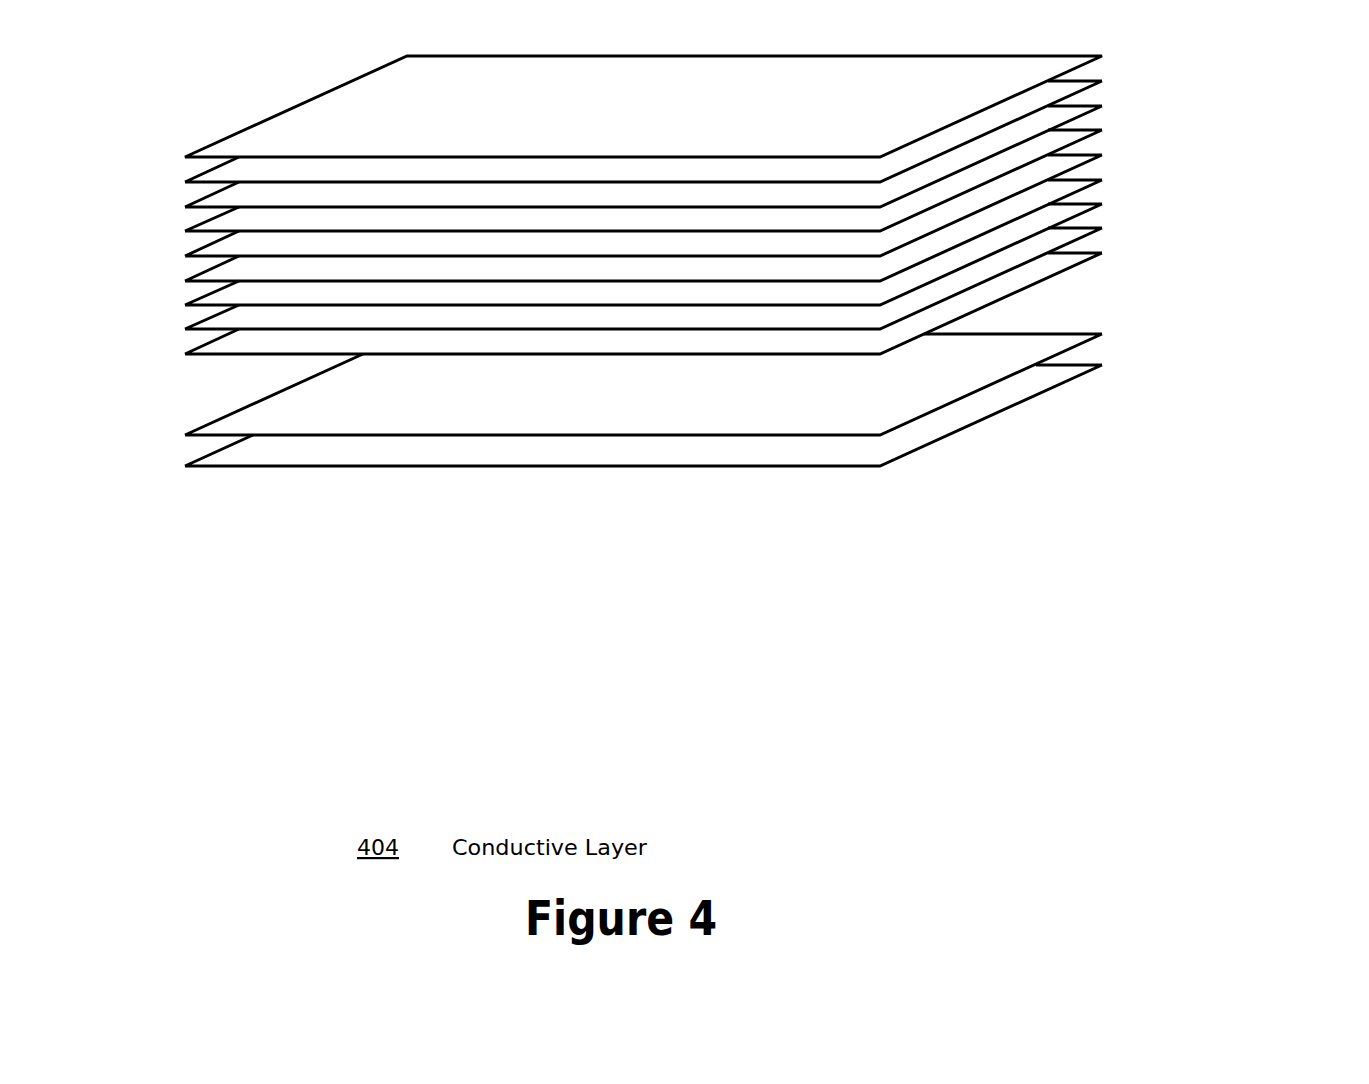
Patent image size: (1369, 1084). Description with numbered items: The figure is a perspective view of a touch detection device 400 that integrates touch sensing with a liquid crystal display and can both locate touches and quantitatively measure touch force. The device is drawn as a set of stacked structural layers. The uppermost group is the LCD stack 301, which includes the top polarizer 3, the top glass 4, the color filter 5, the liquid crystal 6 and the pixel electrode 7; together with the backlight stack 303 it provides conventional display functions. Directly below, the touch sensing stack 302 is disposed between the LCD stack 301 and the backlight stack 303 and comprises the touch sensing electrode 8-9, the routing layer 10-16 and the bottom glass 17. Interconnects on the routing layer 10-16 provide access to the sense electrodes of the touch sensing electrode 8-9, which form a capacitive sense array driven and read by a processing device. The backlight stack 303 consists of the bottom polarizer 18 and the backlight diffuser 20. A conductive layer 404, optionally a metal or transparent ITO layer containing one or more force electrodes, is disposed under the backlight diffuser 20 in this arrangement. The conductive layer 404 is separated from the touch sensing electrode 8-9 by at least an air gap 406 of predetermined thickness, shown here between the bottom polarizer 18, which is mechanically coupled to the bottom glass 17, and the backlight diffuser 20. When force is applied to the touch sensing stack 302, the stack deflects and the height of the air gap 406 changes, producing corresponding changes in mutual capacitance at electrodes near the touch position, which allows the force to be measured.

The touch detection device 400 is at (207, 108).
The top polarizer 3 is at (643, 107).
The top glass 4 is at (643, 132).
The color filter 5 is at (643, 157).
The liquid crystal 6 is at (643, 181).
The pixel electrode 7 is at (643, 206).
The touch sensing electrode 8-9 is at (643, 231).
The routing layer 10-16 is at (643, 255).
The bottom glass 17 is at (643, 279).
The bottom polarizer 18 is at (643, 304).
The backlight diffuser 20 is at (643, 384).
The conductive layer 404 is at (643, 415).
The air gap 406 is at (1033, 312).
The LCD stack 301 is at (702, 495).
The touch sensing stack 302 is at (798, 662).
The backlight stack 303 is at (665, 765).